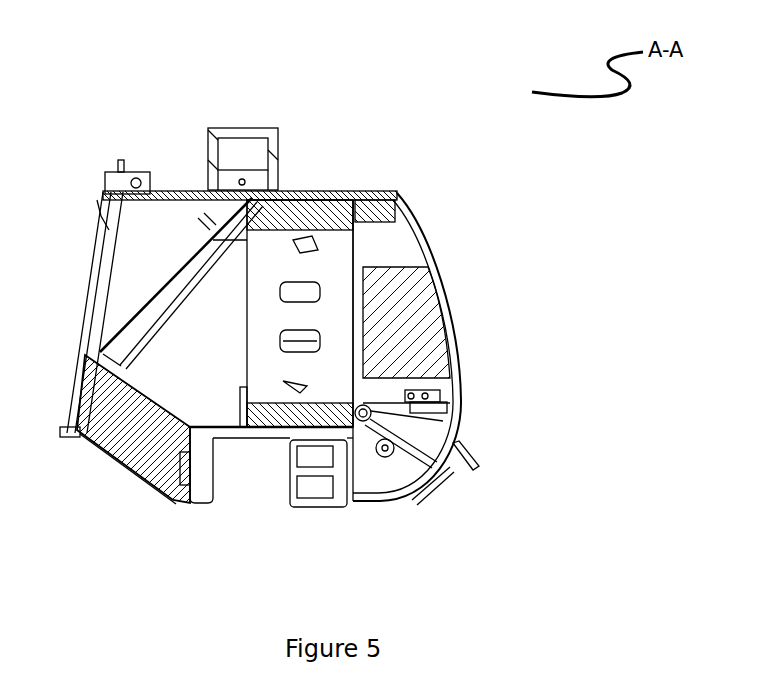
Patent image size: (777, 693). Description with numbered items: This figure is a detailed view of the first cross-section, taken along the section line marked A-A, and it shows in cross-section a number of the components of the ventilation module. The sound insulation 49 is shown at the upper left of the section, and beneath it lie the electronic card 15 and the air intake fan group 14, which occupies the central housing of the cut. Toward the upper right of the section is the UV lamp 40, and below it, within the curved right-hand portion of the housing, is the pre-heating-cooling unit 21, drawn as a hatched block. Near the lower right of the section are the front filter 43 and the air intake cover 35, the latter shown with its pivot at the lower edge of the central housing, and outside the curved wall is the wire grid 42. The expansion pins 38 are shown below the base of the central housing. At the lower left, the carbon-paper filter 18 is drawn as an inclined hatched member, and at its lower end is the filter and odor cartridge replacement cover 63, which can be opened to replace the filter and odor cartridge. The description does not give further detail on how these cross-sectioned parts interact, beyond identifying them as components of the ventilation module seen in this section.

The air intake fan group 14 is at (292, 262).
The electronic card 15 is at (187, 207).
The carbon-paper filter 18 is at (122, 417).
The pre-heating-cooling unit 21 is at (440, 282).
The air intake cover 35 is at (355, 435).
The expansion pins 38 is at (333, 470).
The UV lamp 40 is at (392, 192).
The wire grid 42 is at (437, 487).
The front filter 43 is at (458, 378).
The sound insulation 49 is at (100, 207).
The filter and odor cartridge replacement cover 63 is at (103, 447).